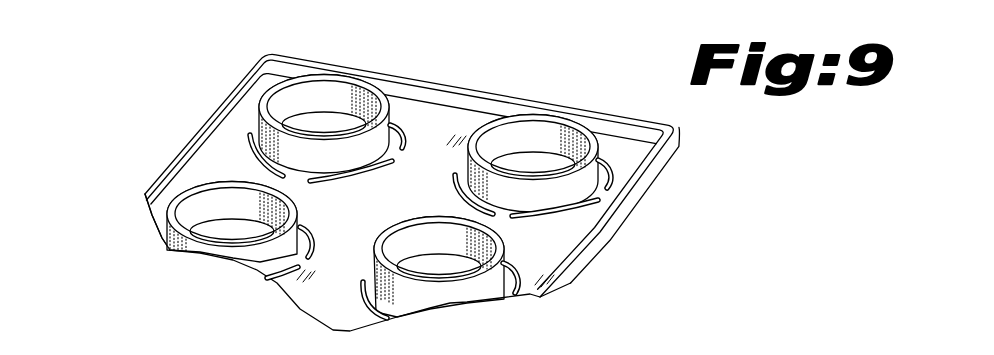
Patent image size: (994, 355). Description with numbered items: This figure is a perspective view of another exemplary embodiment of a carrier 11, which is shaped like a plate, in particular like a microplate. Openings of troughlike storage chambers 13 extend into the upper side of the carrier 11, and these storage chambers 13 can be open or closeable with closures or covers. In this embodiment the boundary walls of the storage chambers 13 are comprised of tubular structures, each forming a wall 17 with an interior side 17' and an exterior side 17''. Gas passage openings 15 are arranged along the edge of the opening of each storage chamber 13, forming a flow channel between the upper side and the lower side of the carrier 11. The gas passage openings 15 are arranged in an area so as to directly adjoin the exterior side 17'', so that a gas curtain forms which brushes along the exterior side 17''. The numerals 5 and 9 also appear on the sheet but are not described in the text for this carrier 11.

The component (partial label from adjacent figure) 5 is at (25, 16).
The component (partial label from adjacent figure) 9 is at (173, 0).
The carrier 11 is at (455, 76).
The storage chamber 13 is at (537, 150).
The gas passage opening 15 is at (478, 210).
The wall 17 is at (244, 124).
The interior side 17' is at (269, 93).
The exterior side 17'' is at (204, 161).